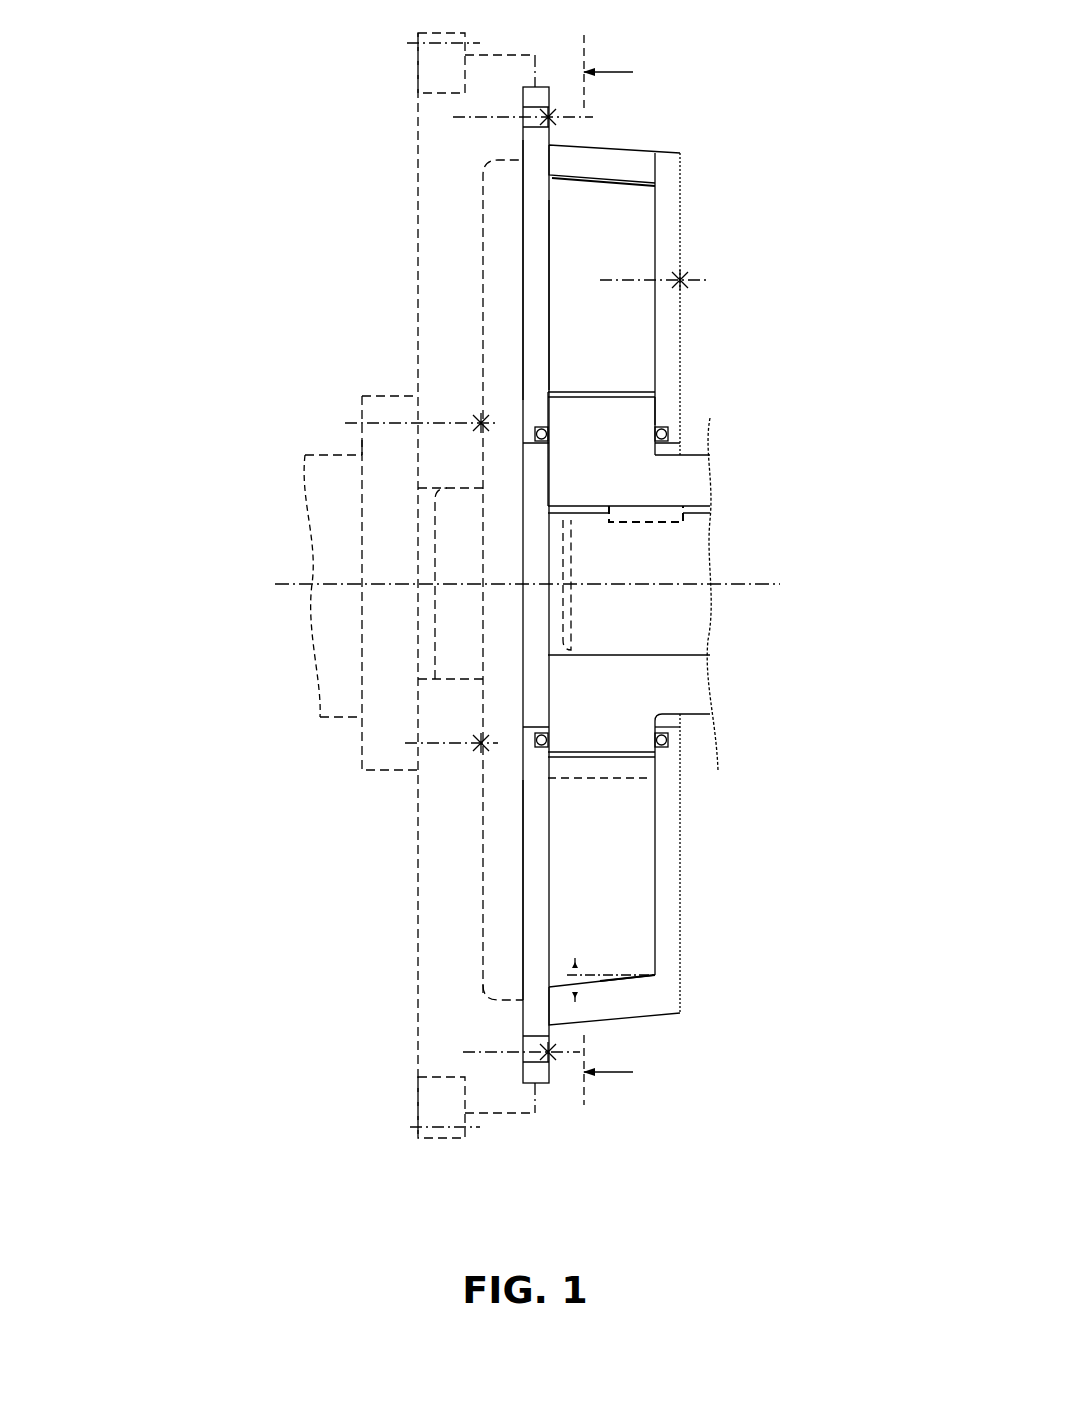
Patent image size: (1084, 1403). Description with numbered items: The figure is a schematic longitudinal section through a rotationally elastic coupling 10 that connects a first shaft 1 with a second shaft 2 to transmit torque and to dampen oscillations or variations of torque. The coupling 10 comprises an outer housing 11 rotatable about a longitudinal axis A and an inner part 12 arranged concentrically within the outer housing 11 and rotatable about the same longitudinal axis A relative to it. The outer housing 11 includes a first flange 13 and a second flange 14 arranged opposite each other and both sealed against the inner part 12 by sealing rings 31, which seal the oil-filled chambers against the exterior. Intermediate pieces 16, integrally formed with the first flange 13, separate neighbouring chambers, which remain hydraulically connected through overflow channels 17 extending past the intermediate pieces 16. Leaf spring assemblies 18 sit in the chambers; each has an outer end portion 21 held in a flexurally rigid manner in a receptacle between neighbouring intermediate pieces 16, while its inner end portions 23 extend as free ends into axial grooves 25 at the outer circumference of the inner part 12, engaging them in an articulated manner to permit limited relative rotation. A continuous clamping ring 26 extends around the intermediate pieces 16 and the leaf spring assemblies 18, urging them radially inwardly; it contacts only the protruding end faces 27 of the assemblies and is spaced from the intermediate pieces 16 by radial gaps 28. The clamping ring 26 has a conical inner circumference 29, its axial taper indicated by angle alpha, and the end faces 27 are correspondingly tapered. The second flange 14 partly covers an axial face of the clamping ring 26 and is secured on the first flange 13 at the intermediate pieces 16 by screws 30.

The rotationally elastic coupling 10 is at (367, 90).
The first shaft 1 is at (337, 468).
The second shaft 2 is at (663, 552).
The longitudinal axis A is at (300, 583).
The outer housing 11 is at (535, 227).
The inner part 12 is at (618, 466).
The first flange 13 is at (535, 275).
The second flange 14 is at (668, 195).
The intermediate pieces 16 is at (595, 320).
The overflow channels 17 is at (625, 388).
The leaf spring assemblies 18 is at (615, 840).
The outer end portion 21 is at (553, 947).
The inner end portions 23 is at (570, 770).
The axial grooves 25 is at (555, 758).
The clamping ring 26 is at (620, 160).
The end faces 27 is at (650, 973).
The radial gaps 28 is at (623, 182).
The conical inner circumference 29 is at (587, 983).
The screws 30 is at (650, 278).
The sealing rings 31 is at (545, 740).